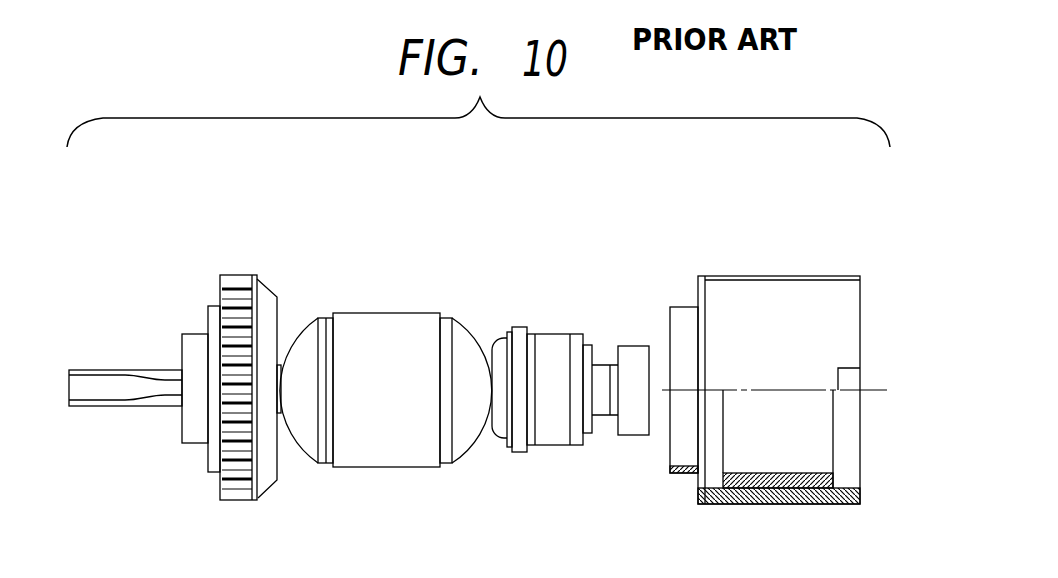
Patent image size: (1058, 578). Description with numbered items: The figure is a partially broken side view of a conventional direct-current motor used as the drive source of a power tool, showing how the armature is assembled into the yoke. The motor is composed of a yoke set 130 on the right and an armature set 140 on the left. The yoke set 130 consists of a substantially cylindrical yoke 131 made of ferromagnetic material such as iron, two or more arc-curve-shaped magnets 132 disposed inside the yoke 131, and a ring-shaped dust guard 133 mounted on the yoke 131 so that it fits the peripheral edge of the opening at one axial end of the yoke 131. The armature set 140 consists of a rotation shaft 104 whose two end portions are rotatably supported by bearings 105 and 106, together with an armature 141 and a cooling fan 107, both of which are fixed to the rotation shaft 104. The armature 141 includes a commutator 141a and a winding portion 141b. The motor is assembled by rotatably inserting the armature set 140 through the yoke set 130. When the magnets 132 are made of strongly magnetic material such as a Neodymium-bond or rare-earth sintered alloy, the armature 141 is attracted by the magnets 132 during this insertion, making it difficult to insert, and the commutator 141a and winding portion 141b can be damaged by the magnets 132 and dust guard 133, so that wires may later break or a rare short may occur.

The rotation shaft 104 is at (170, 402).
The bearing 105 is at (195, 347).
The cooling fan 107 is at (262, 290).
The armature set 140 is at (449, 382).
The armature 141 is at (385, 460).
The commutator 141a is at (548, 345).
The winding portion 141b is at (462, 450).
The bearing 106 is at (631, 432).
The yoke set 130 is at (755, 381).
The yoke 131 is at (815, 505).
The magnet 132 is at (768, 477).
The dust guard 133 is at (682, 310).